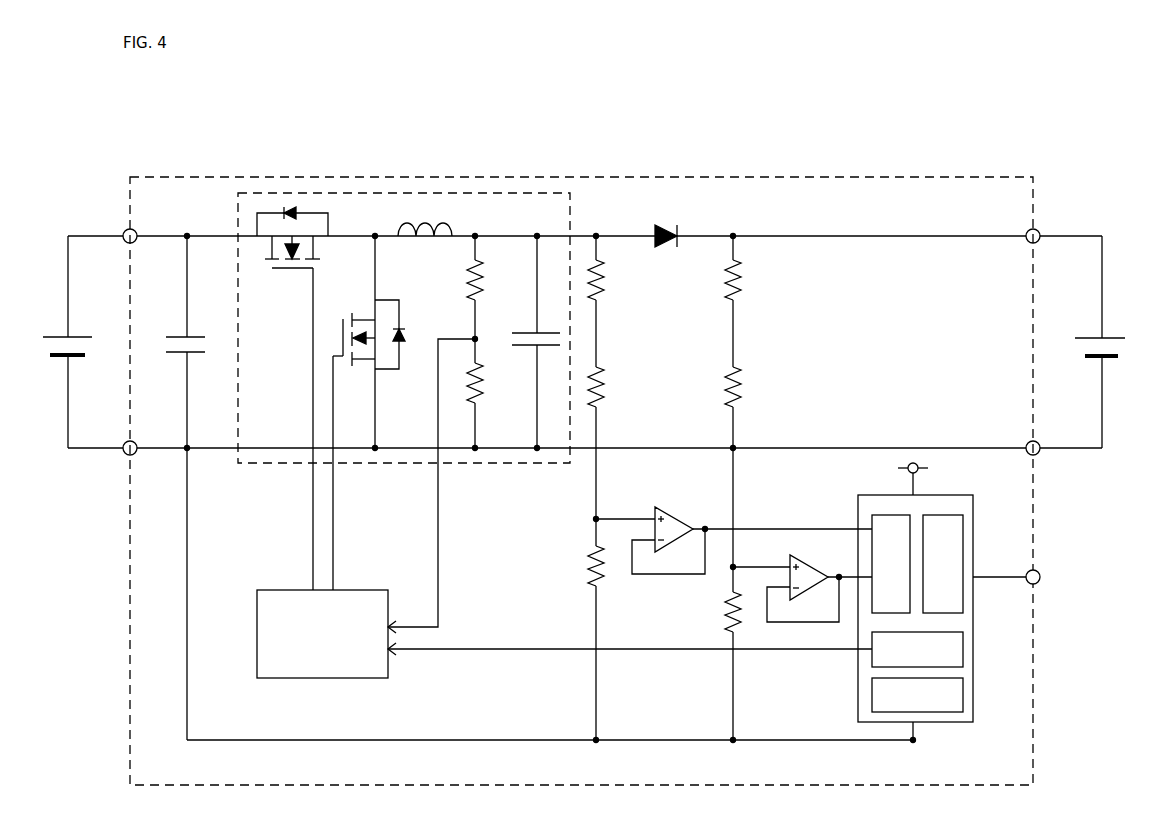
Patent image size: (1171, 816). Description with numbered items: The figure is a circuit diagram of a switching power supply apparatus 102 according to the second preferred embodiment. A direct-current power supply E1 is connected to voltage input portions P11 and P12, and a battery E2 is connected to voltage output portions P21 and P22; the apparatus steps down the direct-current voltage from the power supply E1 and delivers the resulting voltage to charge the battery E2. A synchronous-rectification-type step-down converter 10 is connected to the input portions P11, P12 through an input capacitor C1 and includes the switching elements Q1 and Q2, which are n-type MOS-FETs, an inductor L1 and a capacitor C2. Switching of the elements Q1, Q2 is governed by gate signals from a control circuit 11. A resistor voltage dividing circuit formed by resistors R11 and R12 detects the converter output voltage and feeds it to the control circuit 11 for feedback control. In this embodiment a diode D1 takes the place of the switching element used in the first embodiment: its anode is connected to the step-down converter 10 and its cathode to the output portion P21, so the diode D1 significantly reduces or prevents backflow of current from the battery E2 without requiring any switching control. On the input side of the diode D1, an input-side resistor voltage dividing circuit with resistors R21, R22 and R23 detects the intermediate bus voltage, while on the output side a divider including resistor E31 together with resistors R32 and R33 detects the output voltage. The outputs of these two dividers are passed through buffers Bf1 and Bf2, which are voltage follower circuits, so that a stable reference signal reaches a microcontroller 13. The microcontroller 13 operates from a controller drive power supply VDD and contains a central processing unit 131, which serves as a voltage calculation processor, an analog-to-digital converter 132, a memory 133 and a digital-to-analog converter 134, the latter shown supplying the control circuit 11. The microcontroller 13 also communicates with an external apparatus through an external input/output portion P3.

The switching power supply apparatus 102 is at (200, 177).
The step-down converter 10 is at (288, 192).
The control circuit 11 is at (272, 590).
The microcontroller 13 is at (916, 600).
The central processing unit 131 is at (963, 693).
The analog-to-digital converter 132 is at (870, 517).
The memory 133 is at (963, 520).
The digital-to-analog converter 134 is at (963, 642).
The switching element Q1 is at (301, 398).
The switching element Q2 is at (369, 412).
The inductor L1 is at (425, 242).
The input capacitor C1 is at (191, 487).
The capacitor C2 is at (530, 342).
The resistor R11 is at (456, 299).
The resistor R12 is at (453, 485).
The resistor R21 is at (616, 301).
The resistor R22 is at (616, 456).
The resistor R23 is at (574, 644).
The resistor E31 is at (749, 301).
The resistor R32 is at (750, 479).
The resistor R33 is at (712, 667).
The diode D1 is at (665, 224).
The direct-current power supply E1 is at (58, 342).
The battery E2 is at (1104, 342).
The voltage input portion P11 is at (111, 226).
The voltage input portion P12 is at (111, 457).
The voltage output portion P21 is at (1049, 227).
The voltage output portion P22 is at (1049, 458).
The external input/output portion P3 is at (1021, 579).
The buffer Bf1 is at (733, 528).
The buffer Bf2 is at (802, 586).
The controller drive power supply VDD is at (932, 479).